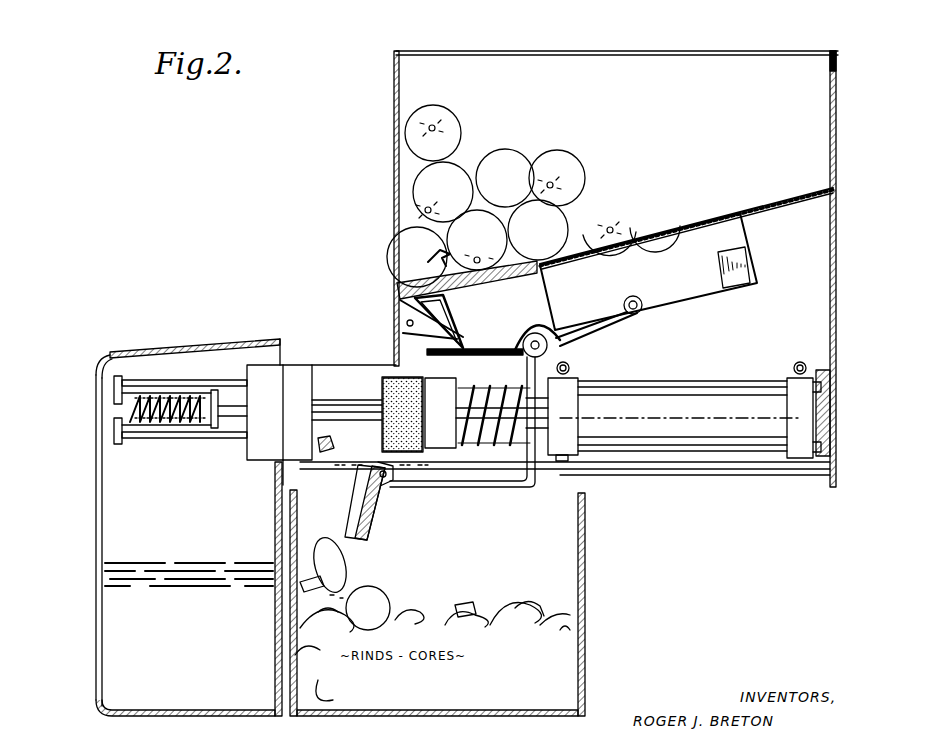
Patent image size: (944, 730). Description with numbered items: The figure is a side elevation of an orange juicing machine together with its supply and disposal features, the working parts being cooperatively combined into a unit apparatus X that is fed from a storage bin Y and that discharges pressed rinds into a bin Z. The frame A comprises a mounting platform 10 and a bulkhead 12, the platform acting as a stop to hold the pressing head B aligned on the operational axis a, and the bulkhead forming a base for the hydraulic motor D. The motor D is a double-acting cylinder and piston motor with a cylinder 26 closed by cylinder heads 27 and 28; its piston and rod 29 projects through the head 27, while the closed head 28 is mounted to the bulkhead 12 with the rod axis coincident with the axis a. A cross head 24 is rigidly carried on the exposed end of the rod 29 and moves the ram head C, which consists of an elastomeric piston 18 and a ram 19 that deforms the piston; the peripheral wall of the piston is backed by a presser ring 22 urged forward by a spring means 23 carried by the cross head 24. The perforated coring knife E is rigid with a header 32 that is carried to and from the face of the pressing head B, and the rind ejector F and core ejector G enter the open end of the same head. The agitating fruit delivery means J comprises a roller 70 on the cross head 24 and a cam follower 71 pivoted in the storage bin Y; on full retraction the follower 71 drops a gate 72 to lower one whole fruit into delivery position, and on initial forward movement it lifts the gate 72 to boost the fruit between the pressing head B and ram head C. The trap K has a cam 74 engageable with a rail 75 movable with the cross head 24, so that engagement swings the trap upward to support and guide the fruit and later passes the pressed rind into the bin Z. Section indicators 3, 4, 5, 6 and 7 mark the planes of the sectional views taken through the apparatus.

The mounting platform 10 is at (745, 470).
The bulkhead 12 is at (828, 396).
The piston 18 is at (419, 413).
The ram 19 is at (522, 449).
The presser ring 22 is at (445, 449).
The spring means 23 is at (486, 449).
The cross head 24 is at (565, 434).
The cylinder 26 is at (672, 398).
The cylinder head 27 is at (582, 398).
The cylinder head 28 is at (800, 460).
The piston and rod 29 is at (560, 412).
The header 32 is at (225, 398).
The roller 70 is at (549, 350).
The cam follower 71 is at (543, 333).
The gate 72 is at (452, 318).
The cam 74 is at (390, 480).
The rail 75 is at (537, 484).
The frame A is at (700, 472).
The pressing head B is at (298, 360).
The ram head C is at (388, 378).
The hydraulic motor D is at (720, 406).
The perforated coring knife E is at (140, 452).
The rind ejector F is at (43, 484).
The core ejector G is at (44, 504).
The agitating fruit delivery means J is at (596, 328).
The trap K is at (372, 520).
The unit apparatus X is at (140, 368).
The storage bin Y is at (396, 185).
The bin Z is at (540, 528).
The operational axis a is at (717, 418).
The section line 3- 3 is at (55, 430).
The section line 4- 4 is at (140, 303).
The section line 5- 5 is at (232, 303).
The section line 6- 6 is at (308, 330).
The section line 7- 7 is at (550, 526).